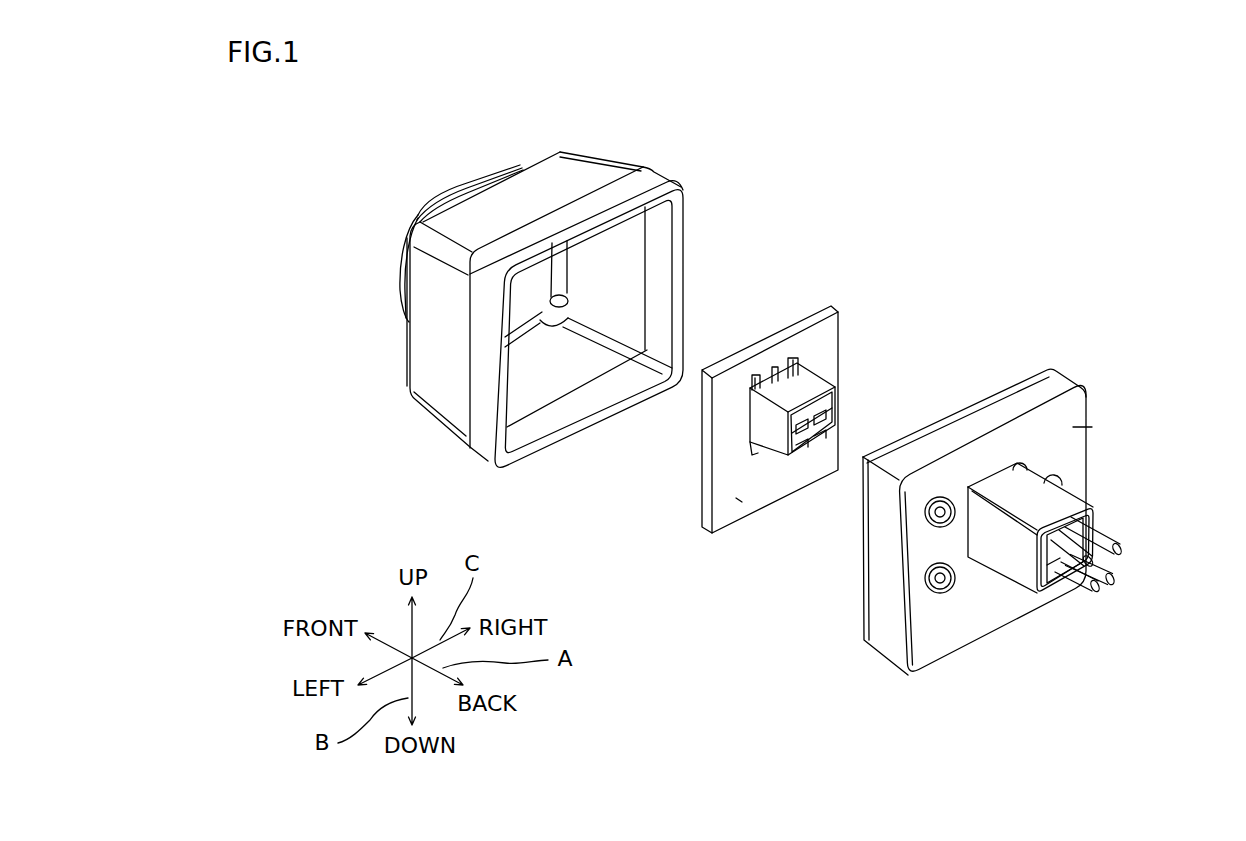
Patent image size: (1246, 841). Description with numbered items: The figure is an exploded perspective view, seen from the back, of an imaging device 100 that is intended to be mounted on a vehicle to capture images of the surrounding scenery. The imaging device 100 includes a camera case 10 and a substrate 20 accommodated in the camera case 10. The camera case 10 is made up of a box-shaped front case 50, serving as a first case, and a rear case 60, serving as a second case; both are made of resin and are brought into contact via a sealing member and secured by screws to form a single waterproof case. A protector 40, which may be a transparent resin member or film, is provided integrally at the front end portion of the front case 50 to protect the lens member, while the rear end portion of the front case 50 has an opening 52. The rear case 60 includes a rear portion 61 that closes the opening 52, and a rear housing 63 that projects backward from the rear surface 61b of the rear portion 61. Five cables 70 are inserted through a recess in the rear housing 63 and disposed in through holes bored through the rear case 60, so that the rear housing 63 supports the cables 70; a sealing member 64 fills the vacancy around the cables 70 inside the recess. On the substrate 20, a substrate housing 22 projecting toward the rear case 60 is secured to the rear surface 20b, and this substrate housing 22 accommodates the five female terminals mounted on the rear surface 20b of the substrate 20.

The imaging device 100 is at (1152, 147).
The camera case 10 is at (775, 88).
The substrate 20 is at (705, 538).
The rear surface of the substrate 20b is at (738, 500).
The substrate housing 22 is at (855, 365).
The protector 40 is at (437, 202).
The front case 50 is at (742, 147).
The opening 52 is at (574, 410).
The rear case 60 is at (988, 332).
The rear portion 61 is at (1072, 333).
The rear surface of the rear portion 61b is at (1085, 427).
The rear housing 63 is at (1002, 602).
The sealing member 64 is at (1047, 582).
The cables 70 is at (1113, 585).